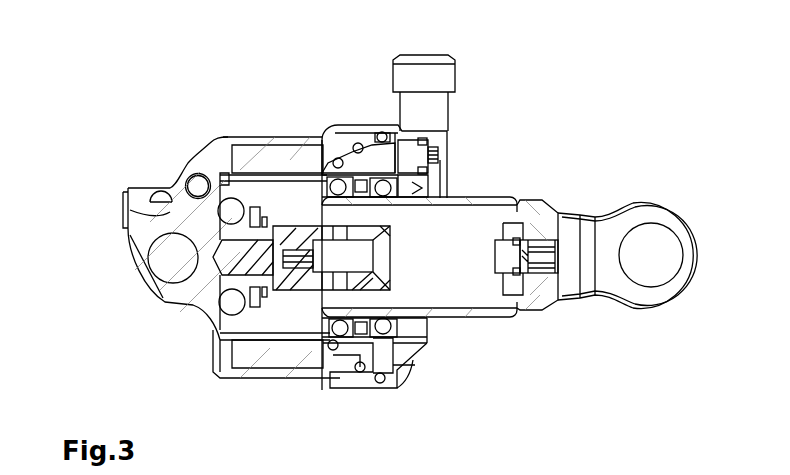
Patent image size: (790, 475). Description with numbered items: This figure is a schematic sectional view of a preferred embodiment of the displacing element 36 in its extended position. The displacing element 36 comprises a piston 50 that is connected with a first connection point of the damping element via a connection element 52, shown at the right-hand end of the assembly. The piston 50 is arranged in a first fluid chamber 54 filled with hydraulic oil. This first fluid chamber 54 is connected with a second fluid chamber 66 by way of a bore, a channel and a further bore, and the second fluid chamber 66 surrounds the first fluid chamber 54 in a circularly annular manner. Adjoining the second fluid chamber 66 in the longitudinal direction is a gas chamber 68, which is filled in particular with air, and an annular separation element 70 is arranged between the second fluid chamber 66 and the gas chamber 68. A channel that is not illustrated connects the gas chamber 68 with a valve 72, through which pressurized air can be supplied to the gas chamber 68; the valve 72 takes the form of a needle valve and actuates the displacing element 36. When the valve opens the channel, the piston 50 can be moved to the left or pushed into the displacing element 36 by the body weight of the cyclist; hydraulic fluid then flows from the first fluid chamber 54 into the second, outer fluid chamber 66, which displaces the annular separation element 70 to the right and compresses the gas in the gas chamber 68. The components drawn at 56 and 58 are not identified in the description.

The displacing element 36 is at (339, 90).
The piston 50 is at (503, 318).
The connection element 52 is at (607, 270).
The first fluid chamber 54 is at (277, 313).
The housing 56 is at (247, 257).
The cylinder tube 58 is at (458, 280).
The second fluid chamber 66 is at (273, 158).
The gas chamber 68 is at (393, 357).
The annular separation element 70 is at (348, 360).
The valve 72 is at (440, 73).